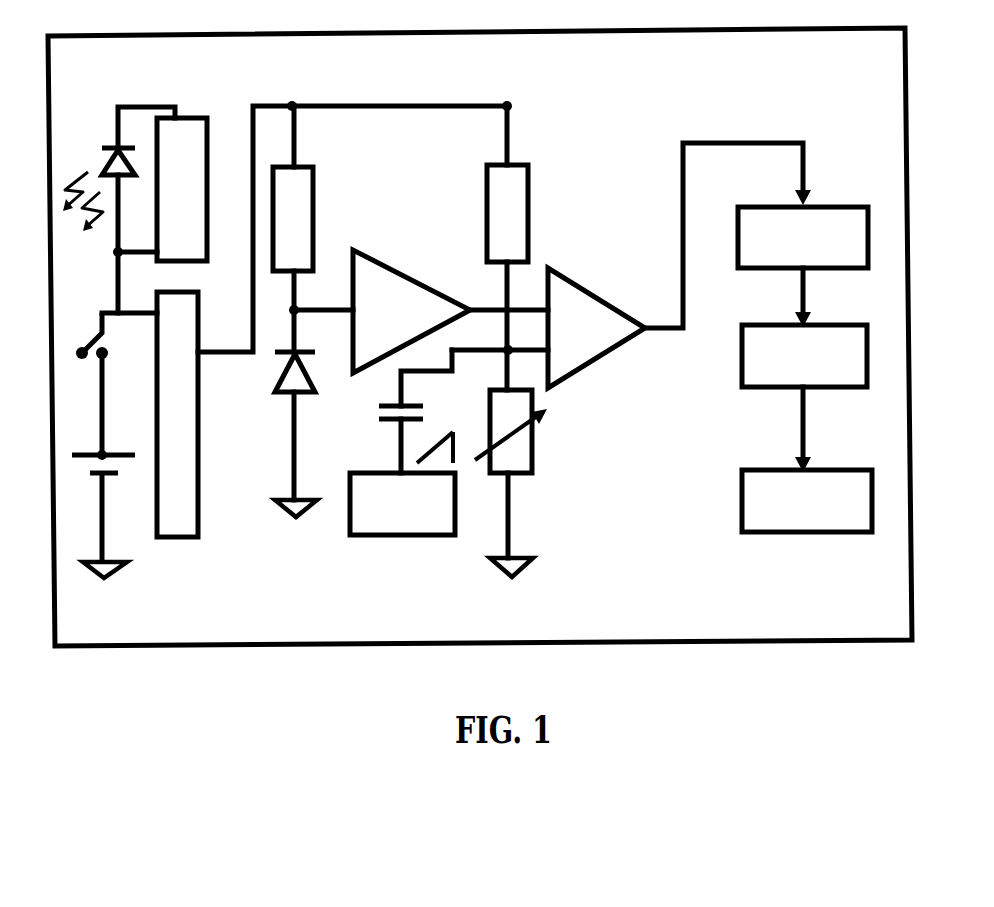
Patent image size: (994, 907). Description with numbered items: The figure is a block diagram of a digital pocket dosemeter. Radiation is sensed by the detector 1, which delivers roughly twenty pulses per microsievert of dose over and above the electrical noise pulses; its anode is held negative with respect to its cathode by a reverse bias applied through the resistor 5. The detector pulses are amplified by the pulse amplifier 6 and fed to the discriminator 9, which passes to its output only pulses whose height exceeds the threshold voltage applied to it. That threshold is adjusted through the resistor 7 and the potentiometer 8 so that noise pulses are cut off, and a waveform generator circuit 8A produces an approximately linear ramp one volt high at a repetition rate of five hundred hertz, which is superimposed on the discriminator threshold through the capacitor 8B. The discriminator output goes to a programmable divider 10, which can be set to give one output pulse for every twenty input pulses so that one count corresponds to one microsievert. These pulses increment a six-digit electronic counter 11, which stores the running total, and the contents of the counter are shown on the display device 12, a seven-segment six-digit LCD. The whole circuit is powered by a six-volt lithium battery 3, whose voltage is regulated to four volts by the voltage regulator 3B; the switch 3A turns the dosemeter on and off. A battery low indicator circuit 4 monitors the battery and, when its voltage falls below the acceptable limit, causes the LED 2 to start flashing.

The detector 1 is at (267, 390).
The LED 2 is at (107, 142).
The lithium battery 3 is at (92, 442).
The switch 3A is at (83, 335).
The voltage regulator 3B is at (202, 478).
The battery low indicator circuit 4 is at (200, 165).
The resistor 5 is at (323, 235).
The pulse amplifier 6 is at (411, 311).
The resistor 7 is at (477, 253).
The potentiometer 8 is at (478, 428).
The waveform generator circuit 8A is at (368, 548).
The capacitor 8B is at (365, 416).
The discriminator 9 is at (596, 328).
The programmable divider 10 is at (730, 243).
The electronic counter 11 is at (732, 342).
The display device 12 is at (733, 485).